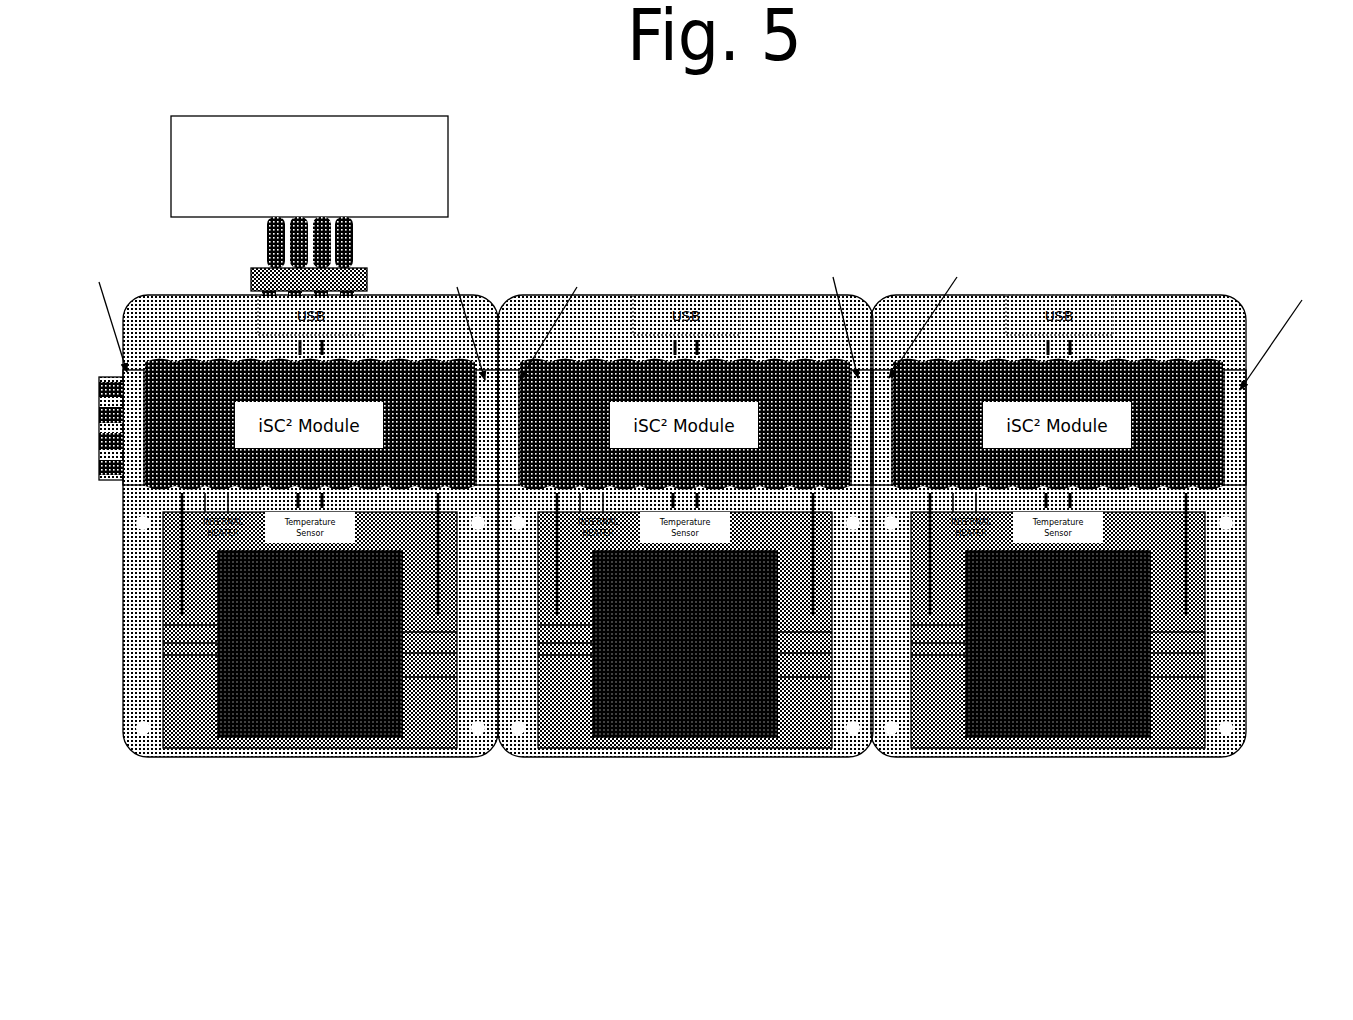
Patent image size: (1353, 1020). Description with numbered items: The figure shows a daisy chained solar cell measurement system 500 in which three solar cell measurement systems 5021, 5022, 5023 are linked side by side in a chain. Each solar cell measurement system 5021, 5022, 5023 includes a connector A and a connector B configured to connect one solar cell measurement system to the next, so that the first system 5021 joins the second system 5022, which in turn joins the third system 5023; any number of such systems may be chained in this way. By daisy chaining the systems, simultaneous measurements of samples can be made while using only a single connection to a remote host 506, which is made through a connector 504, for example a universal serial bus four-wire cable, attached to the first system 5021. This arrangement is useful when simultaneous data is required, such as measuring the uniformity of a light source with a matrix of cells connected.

The daisy chained solar cell measurement system 500 is at (973, 178).
The solar cell measurement system 5021 is at (297, 758).
The solar cell measurement system 5022 is at (687, 757).
The solar cell measurement system 5023 is at (1085, 757).
The connector 504 is at (264, 253).
The remote host 506 is at (302, 112).